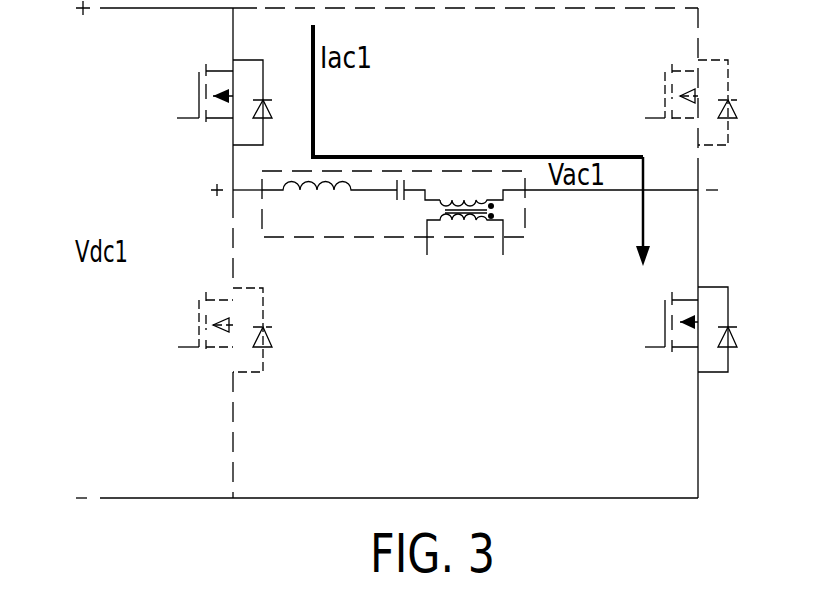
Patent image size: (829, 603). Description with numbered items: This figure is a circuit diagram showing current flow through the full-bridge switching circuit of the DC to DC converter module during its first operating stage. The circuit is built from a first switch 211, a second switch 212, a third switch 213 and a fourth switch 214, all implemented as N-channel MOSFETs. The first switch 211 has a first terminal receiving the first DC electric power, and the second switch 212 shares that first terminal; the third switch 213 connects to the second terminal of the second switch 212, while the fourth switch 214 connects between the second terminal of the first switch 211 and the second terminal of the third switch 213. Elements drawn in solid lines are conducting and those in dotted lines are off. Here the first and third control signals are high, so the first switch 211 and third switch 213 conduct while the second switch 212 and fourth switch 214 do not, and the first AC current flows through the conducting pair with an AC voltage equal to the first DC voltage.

The first switch 211 is at (222, 70).
The second switch 212 is at (686, 70).
The third switch 213 is at (685, 350).
The fourth switch 214 is at (218, 352).